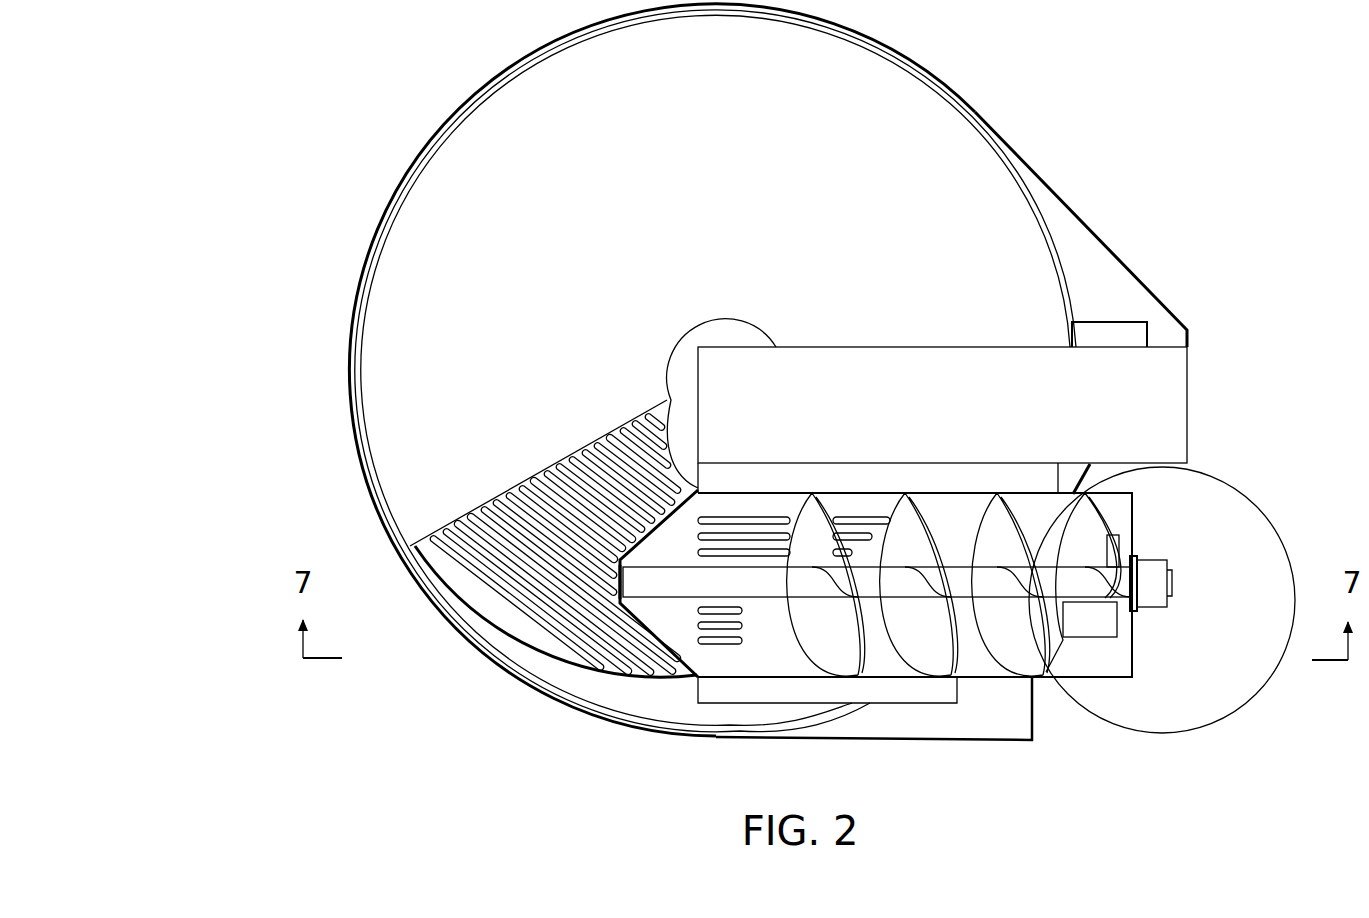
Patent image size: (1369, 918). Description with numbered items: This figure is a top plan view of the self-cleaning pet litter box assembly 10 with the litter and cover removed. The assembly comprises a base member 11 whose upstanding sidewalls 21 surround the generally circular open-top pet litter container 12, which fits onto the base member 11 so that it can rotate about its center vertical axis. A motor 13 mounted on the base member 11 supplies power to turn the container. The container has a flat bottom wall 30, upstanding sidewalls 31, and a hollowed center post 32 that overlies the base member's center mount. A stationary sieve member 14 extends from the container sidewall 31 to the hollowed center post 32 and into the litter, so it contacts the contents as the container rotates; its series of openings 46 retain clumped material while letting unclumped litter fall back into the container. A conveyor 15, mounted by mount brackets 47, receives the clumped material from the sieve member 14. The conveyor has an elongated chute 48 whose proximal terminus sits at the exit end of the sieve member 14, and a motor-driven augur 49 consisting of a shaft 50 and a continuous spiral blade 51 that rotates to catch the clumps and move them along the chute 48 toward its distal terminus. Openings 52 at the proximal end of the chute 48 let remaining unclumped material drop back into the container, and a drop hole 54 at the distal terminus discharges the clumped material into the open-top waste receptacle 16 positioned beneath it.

The self-cleaning pet litter box assembly 10 is at (300, 396).
The base member 11 is at (928, 66).
The open-top pet litter container 12 is at (1044, 238).
The motor 13 is at (1097, 324).
The sieve member 14 is at (500, 617).
The conveyor 15 is at (800, 655).
The waste receptacle 16 is at (1254, 508).
The upstanding sidewalls 21 is at (388, 224).
The flat bottom wall 30 is at (688, 212).
The upstanding sidewalls 31 is at (847, 36).
The hollowed center post 32 is at (738, 311).
The openings 46 is at (575, 458).
The mount brackets 47 is at (940, 462).
The elongated chute 48 is at (992, 675).
The augur 49 is at (1035, 568).
The shaft 50 is at (1124, 552).
The continuous spiral blade 51 is at (1077, 487).
The openings 52 is at (733, 523).
The drop hole 54 is at (1115, 626).